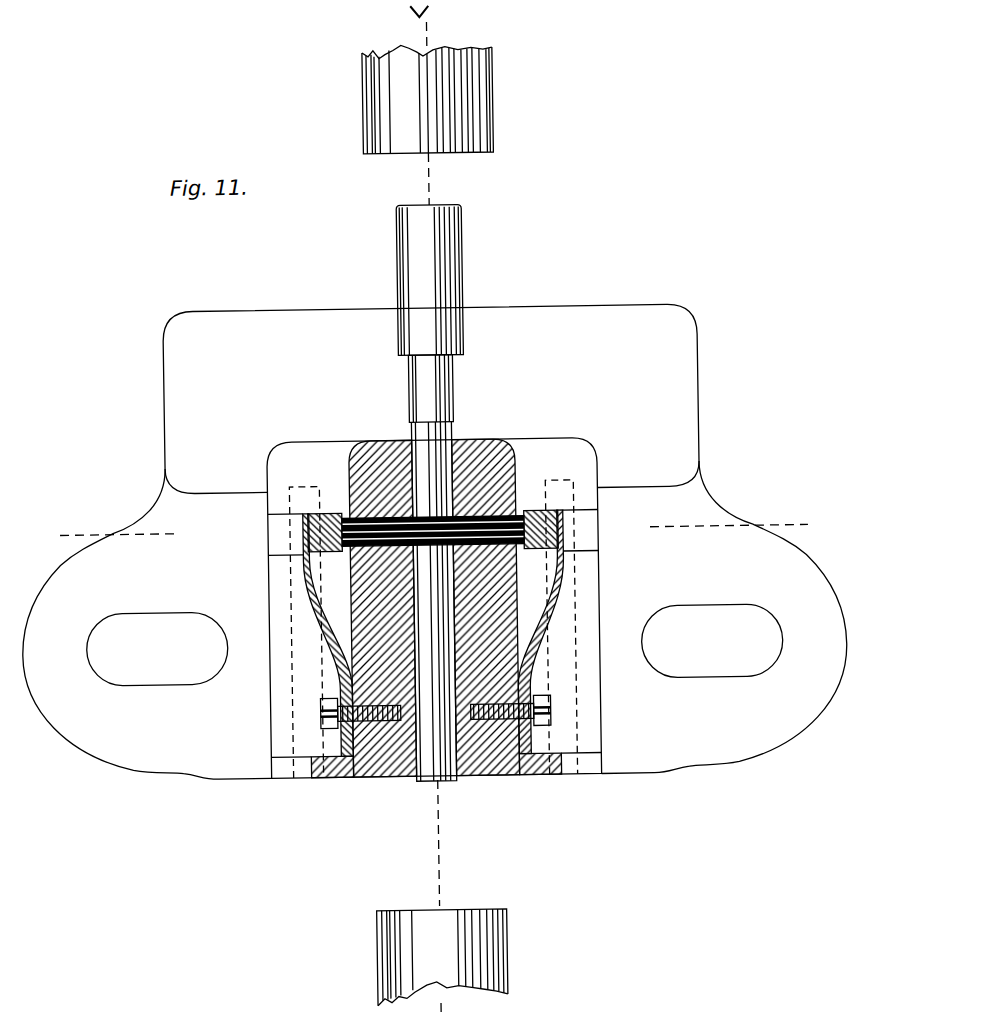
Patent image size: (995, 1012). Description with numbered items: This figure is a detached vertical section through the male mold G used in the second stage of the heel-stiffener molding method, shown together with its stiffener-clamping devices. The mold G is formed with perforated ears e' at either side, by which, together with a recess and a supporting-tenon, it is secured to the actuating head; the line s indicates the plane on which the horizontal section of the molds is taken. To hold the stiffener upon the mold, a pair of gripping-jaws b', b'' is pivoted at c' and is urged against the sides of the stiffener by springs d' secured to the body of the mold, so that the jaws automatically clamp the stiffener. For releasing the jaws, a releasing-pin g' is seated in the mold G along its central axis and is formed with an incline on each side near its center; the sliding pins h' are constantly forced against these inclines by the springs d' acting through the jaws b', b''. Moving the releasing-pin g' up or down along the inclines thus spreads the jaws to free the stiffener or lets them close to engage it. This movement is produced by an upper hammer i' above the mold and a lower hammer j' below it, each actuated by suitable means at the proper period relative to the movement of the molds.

The upper hammer i' is at (436, 99).
The releasing-pin g' is at (448, 492).
The male mold G is at (373, 447).
The sliding pins h' is at (433, 616).
The gripping-jaw b' is at (329, 551).
The gripping-jaw b'' is at (542, 548).
The springs d' is at (436, 633).
The pivots c' is at (437, 754).
The perforated ears e' is at (433, 542).
The section line s is at (429, 528).
The lower hammer j' is at (454, 957).